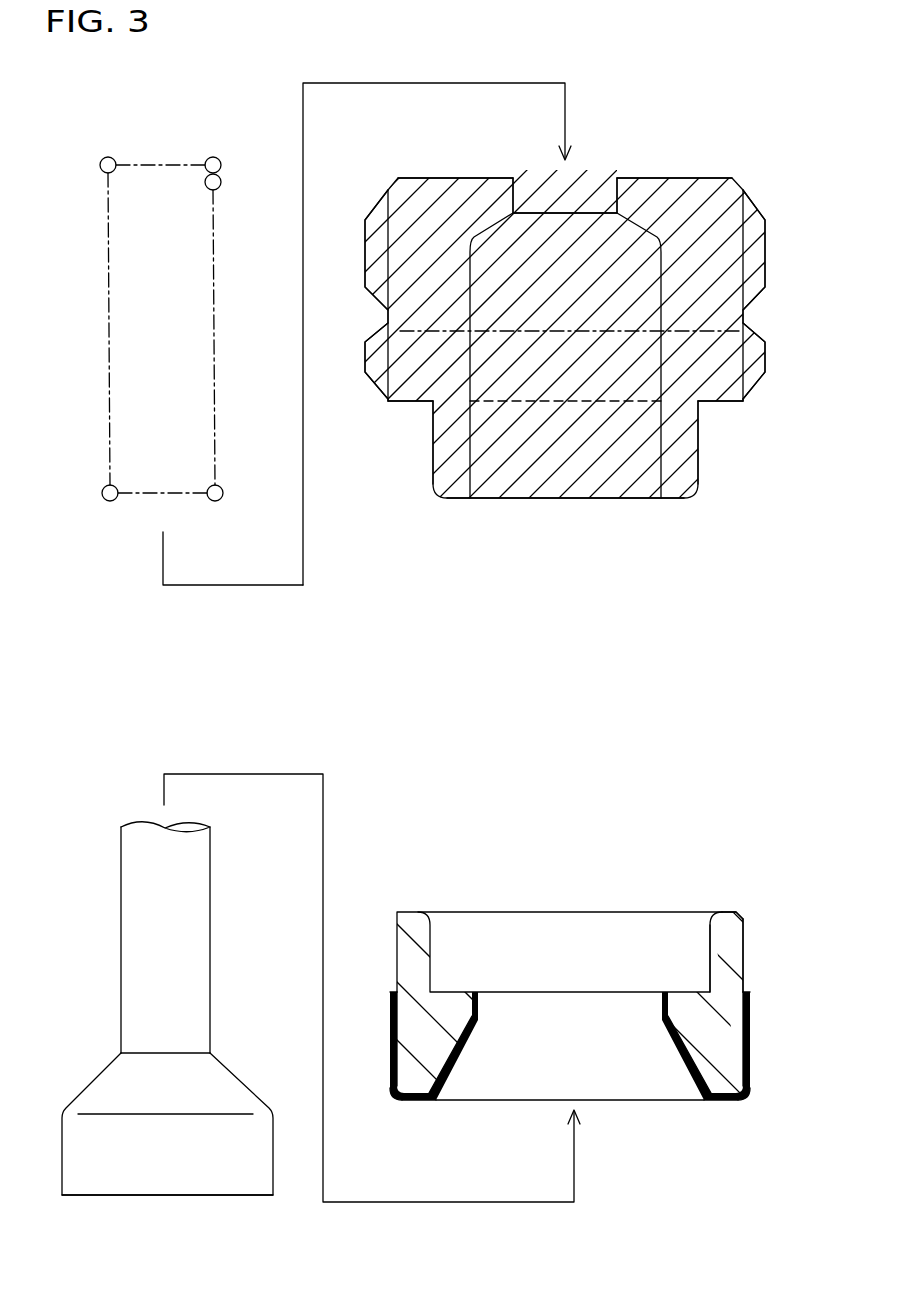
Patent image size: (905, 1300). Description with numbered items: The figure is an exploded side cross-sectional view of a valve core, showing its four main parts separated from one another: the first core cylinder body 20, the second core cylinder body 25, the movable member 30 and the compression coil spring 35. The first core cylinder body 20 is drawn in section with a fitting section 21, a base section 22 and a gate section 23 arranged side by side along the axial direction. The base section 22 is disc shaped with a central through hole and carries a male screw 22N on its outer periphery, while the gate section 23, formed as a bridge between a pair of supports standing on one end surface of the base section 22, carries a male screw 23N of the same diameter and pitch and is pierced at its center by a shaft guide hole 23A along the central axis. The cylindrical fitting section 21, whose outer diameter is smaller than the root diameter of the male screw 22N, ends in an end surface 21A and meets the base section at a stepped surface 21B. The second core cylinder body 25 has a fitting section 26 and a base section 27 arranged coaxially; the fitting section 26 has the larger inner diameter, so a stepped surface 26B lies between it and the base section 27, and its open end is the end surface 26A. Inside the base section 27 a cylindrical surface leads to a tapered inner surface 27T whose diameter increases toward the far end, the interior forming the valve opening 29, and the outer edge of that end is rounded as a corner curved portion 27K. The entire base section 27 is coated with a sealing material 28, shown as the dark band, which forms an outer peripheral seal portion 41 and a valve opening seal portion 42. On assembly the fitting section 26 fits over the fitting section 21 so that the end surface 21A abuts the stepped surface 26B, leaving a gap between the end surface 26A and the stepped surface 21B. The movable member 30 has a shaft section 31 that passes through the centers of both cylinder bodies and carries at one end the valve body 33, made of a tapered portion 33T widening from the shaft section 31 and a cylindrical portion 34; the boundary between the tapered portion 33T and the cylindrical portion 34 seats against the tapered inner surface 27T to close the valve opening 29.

The first core cylinder body 20 is at (741, 147).
The fitting section 21 is at (675, 452).
The end surface 21A is at (670, 497).
The stepped surface 21B is at (722, 402).
The base section 22 is at (720, 340).
The male screw 22N is at (768, 353).
The gate section 23 is at (722, 197).
The shaft guide hole 23A is at (612, 178).
The male screw 23N is at (766, 228).
The second core cylinder body 25 is at (759, 887).
The fitting section 26 is at (733, 950).
The end surface 26A is at (722, 912).
The stepped surface 26B is at (683, 992).
The base section 27 is at (730, 1050).
The corner curved portion 27K is at (751, 1078).
The tapered inner surface 27T is at (733, 1078).
The sealing material 28 is at (750, 996).
The valve opening 29 is at (630, 1020).
The movable member 30 is at (115, 885).
The shaft section 31 is at (150, 936).
The valve body 33 is at (233, 1243).
The tapered portion 33T is at (167, 1088).
The cylindrical portion 34 is at (210, 1138).
The compression coil spring 35 is at (110, 144).
The outer peripheral seal portion 41 is at (750, 1064).
The valve opening seal portion 42 is at (680, 1033).